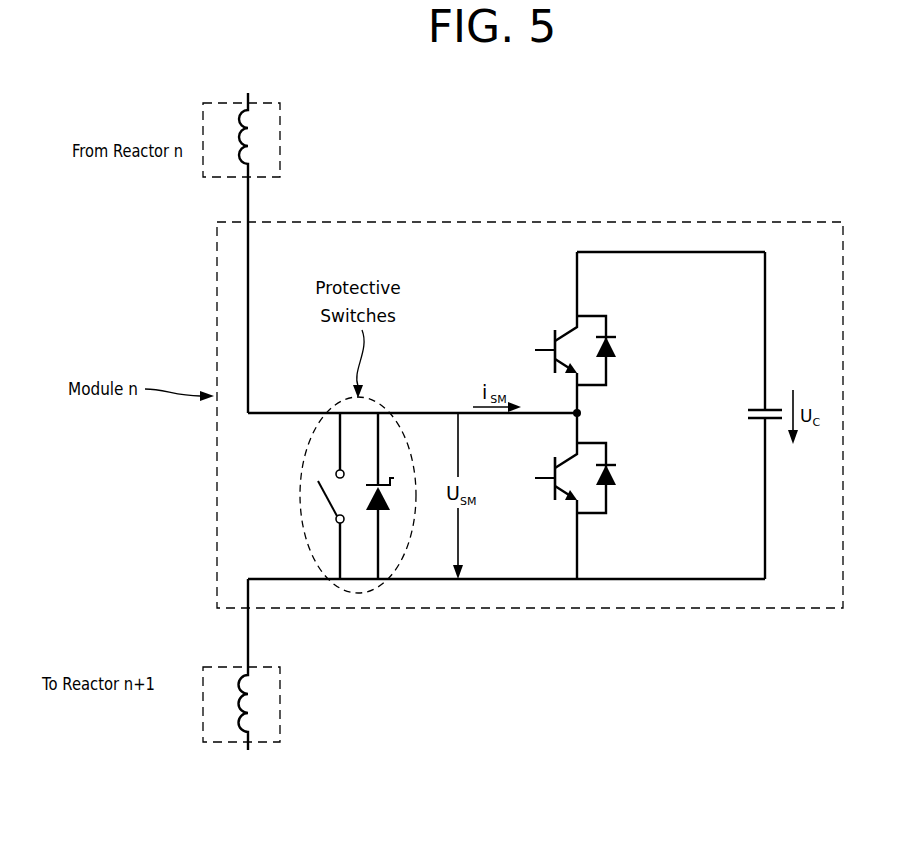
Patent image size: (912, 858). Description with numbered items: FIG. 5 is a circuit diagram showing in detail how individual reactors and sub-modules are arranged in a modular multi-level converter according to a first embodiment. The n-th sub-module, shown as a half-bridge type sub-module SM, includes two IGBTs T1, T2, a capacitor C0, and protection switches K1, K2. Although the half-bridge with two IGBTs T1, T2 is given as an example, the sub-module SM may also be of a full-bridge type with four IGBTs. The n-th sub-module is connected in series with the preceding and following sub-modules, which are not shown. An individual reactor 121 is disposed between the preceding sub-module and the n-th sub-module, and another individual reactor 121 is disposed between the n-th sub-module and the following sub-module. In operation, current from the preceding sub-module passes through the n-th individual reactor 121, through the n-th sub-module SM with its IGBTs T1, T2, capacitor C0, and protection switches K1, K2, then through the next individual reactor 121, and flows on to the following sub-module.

The individual reactor 121 is at (280, 128).
The sub-module SM is at (528, 222).
The protection switch K1 is at (325, 496).
The protection switch K2 is at (390, 496).
The IGBT T1 is at (570, 350).
The IGBT T2 is at (570, 478).
The capacitor C0 is at (753, 415).